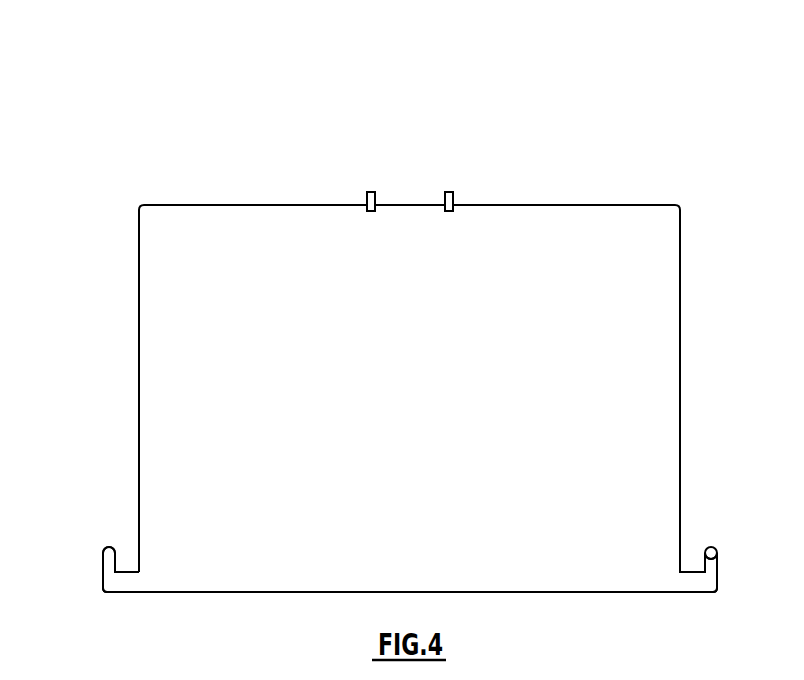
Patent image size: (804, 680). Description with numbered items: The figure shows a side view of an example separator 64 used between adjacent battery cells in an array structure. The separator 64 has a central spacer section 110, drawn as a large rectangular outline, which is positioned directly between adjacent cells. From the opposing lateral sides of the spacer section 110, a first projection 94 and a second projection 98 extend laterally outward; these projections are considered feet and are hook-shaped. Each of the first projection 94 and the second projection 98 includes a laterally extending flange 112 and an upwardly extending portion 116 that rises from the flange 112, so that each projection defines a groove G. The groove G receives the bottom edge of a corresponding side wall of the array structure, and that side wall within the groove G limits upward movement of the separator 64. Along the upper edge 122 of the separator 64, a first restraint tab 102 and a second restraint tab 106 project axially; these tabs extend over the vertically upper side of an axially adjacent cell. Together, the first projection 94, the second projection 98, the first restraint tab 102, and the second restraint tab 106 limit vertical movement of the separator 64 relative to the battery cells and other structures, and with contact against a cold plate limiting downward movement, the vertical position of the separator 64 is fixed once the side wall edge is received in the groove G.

The separator 64 is at (713, 206).
The spacer section 110 is at (657, 386).
The upper edge 122 is at (560, 204).
The laterally extending flange 112 is at (692, 584).
The second projection 98 is at (101, 581).
The first projection 94 is at (722, 541).
The upwardly extending portion 116 is at (710, 557).
The groove G is at (698, 526).
The second restraint tab 106 is at (381, 187).
The first restraint tab 102 is at (459, 187).